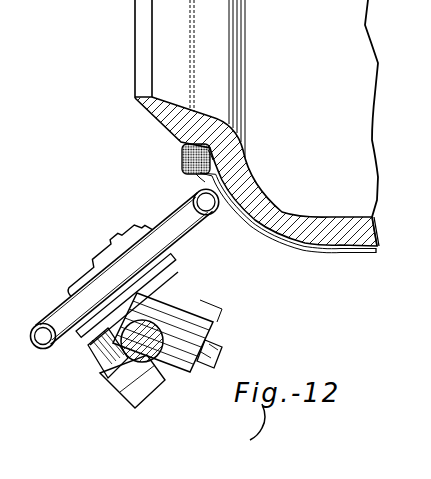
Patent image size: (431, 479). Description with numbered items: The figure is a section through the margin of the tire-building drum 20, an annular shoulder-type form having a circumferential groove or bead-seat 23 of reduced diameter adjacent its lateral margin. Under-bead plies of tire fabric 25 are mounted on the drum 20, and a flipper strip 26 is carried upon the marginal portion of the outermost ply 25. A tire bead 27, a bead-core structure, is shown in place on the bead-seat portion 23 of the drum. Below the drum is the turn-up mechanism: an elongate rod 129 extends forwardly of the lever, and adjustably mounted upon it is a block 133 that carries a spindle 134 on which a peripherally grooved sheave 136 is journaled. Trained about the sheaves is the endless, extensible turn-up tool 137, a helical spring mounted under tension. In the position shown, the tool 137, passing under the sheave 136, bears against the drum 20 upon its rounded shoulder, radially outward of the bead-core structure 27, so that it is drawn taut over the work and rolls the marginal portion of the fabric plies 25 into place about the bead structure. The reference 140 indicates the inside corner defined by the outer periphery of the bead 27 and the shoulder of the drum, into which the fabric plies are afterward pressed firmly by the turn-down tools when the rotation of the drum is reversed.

The tire-building form or drum 20 is at (215, 150).
The bead-seat 23 is at (183, 152).
The under-bead ply of tire fabric 25 is at (358, 250).
The flipper strip 26 is at (247, 234).
The tire bead 27 is at (208, 153).
The rod 129 is at (152, 352).
The block 133 is at (190, 303).
The spindle 134 is at (214, 361).
The sheave 136 is at (70, 328).
The turn-up tool 137 is at (37, 348).
The inside corner 140 is at (196, 172).